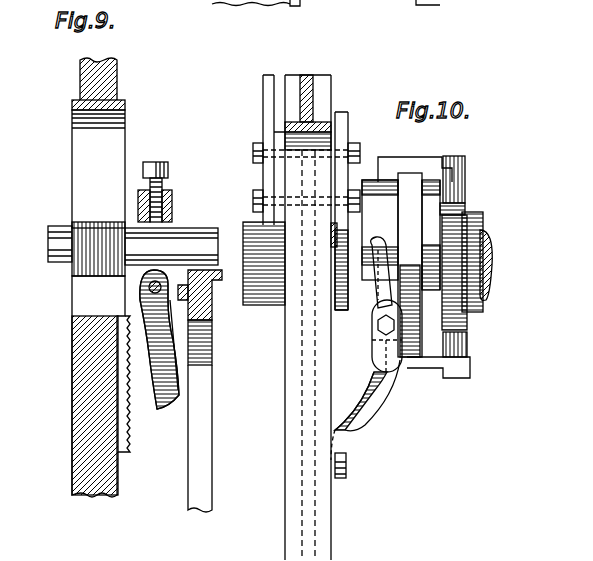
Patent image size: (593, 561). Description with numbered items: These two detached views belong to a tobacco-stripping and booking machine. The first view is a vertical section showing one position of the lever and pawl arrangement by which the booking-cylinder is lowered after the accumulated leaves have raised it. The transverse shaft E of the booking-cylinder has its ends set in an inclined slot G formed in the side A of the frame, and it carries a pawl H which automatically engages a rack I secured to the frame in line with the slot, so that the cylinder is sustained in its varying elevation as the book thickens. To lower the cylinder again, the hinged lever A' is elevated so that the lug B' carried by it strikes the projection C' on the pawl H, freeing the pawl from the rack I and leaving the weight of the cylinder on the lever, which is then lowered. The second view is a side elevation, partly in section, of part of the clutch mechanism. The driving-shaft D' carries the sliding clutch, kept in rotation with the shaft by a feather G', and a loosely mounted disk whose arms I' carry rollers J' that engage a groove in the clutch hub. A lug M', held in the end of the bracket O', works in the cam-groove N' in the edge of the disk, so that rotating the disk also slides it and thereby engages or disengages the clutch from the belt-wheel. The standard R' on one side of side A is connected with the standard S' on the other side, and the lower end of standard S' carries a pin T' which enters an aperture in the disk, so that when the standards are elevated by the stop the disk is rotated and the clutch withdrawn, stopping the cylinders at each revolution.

In FIG. 9, the inclined slots G is at (98, 143).
In FIG. 9, the transverse shaft E is at (82, 243).
In FIG. 9, the projections C' is at (183, 242).
In FIG. 10, the projections C' is at (256, 259).
In FIG. 9, the side A is at (88, 386).
In FIG. 10, the side A is at (296, 317).
In FIG. 9, the racks I is at (127, 384).
In FIG. 9, the pawls H is at (164, 343).
In FIG. 9, the lugs B' is at (212, 317).
In FIG. 9, the hinged levers A' is at (200, 438).
In FIG. 10, the standard R' is at (264, 150).
In FIG. 10, the standard S' is at (350, 211).
In FIG. 10, the arms I' is at (424, 267).
In FIG. 10, the pin T' is at (380, 230).
In FIG. 10, the driving-shaft D' is at (410, 265).
In FIG. 10, the rollers J' is at (465, 259).
In FIG. 10, the sleeve K is at (466, 208).
In FIG. 10, the feather G' is at (485, 259).
In FIG. 10, the cam-groove N' is at (379, 272).
In FIG. 10, the lug M' is at (387, 336).
In FIG. 10, the bracket O' is at (365, 410).